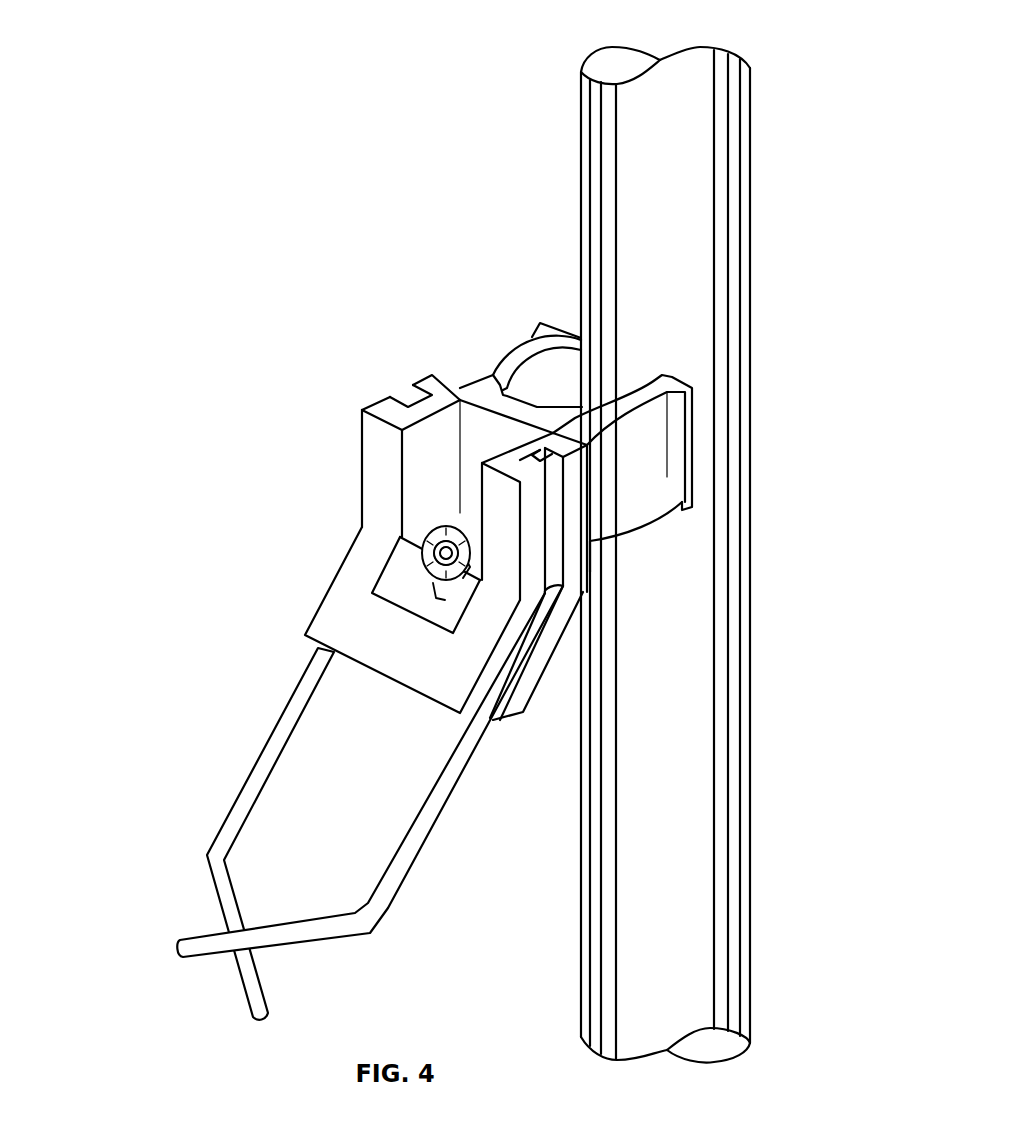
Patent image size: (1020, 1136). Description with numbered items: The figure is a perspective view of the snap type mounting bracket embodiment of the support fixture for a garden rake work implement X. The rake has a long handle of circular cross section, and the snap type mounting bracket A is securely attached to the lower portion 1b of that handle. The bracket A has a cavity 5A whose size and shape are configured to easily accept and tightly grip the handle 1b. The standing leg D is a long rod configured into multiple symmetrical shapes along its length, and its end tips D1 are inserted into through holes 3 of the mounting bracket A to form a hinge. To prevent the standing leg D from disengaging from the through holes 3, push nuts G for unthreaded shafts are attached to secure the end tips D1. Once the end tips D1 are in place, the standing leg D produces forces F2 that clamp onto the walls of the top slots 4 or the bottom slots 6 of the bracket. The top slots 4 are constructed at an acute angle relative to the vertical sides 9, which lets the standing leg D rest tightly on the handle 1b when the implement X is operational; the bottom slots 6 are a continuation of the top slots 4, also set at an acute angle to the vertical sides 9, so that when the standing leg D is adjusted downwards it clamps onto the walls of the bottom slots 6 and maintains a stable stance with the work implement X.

The lower portion of handle 1b is at (750, 268).
The work implement X is at (556, 95).
The snap type mounting bracket A is at (326, 388).
The top slots 4 is at (410, 402).
The cavity 5A is at (558, 373).
The vertical sides 9 is at (556, 434).
The push nuts G is at (421, 567).
The through holes 3 is at (428, 533).
The end tips D1 is at (420, 542).
The standing leg D is at (170, 899).
The bottom slots 6 is at (490, 703).
The forces F2 is at (212, 805).